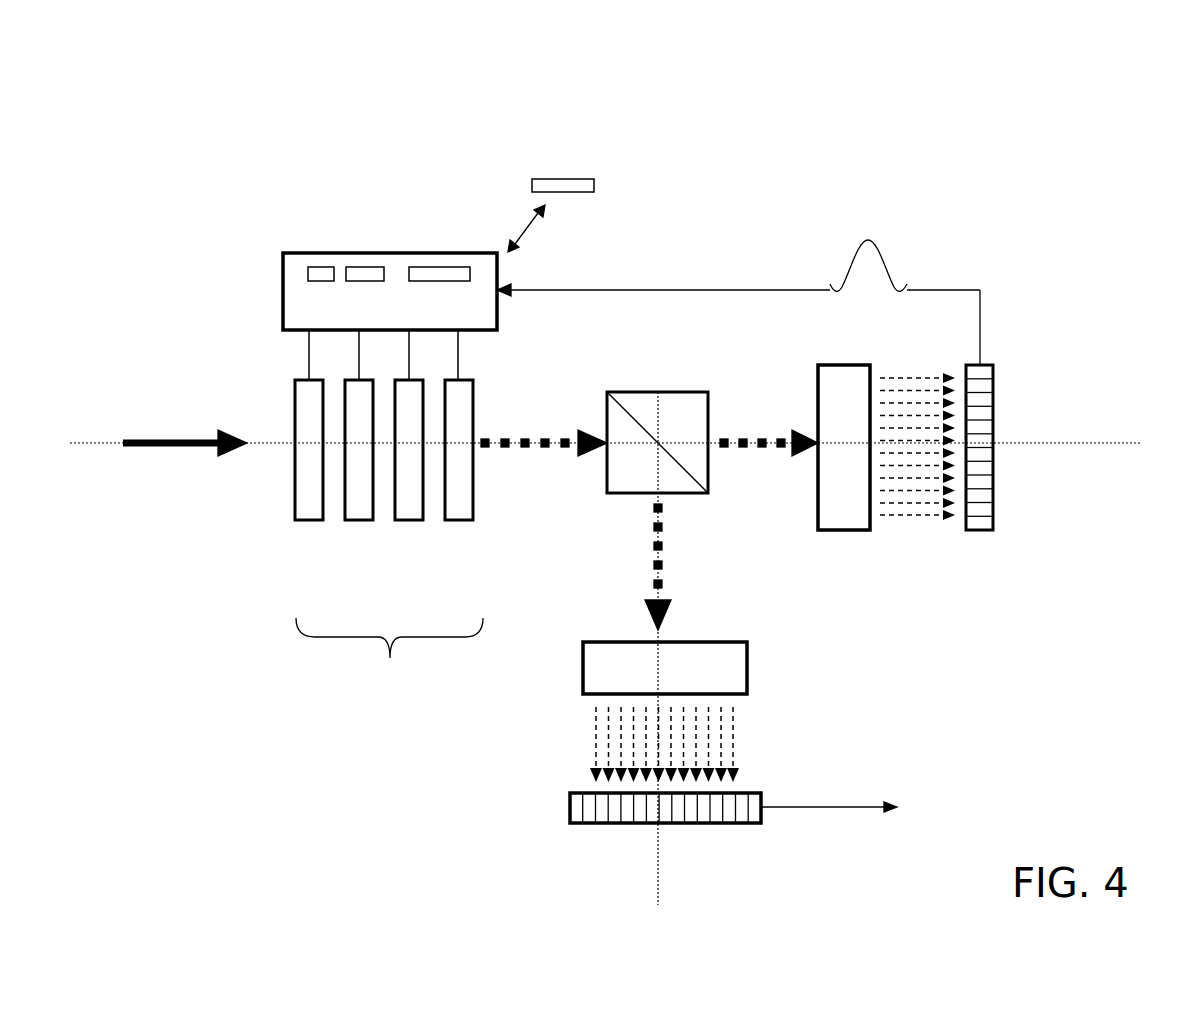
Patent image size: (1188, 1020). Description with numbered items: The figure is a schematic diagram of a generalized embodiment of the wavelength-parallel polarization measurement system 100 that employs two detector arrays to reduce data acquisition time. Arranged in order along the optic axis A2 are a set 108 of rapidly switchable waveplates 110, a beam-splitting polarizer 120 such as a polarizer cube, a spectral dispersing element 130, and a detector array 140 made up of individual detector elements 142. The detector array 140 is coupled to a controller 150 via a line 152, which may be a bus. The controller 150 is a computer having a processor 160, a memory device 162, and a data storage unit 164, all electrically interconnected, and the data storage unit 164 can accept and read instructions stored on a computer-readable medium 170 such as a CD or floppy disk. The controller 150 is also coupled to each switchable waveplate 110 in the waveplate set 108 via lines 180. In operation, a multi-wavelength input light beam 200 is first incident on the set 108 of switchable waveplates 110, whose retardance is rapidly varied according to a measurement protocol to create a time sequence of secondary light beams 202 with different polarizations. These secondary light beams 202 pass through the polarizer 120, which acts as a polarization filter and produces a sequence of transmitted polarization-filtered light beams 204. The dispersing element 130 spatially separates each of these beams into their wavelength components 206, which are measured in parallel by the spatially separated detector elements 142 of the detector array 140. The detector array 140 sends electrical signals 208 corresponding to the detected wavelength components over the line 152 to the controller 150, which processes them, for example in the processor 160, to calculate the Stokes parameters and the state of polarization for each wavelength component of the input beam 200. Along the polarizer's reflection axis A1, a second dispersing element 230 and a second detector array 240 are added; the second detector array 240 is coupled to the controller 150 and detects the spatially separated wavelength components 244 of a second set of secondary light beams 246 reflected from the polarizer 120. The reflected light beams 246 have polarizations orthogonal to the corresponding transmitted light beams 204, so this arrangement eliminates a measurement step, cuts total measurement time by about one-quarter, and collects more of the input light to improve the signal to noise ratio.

The wavelength-parallel polarization measurement system 100 is at (336, 94).
The set of switchable waveplates 108 is at (389, 668).
The switchable waveplate 110 is at (408, 521).
The polarizer 120 is at (700, 494).
The spectral dispersing element 130 is at (845, 531).
The detector array 140 is at (970, 555).
The detector element 142 is at (993, 506).
The controller 150 is at (283, 300).
The line 152 is at (780, 290).
The processor 160 is at (320, 267).
The memory device 162 is at (370, 267).
The data storage unit 164 is at (445, 267).
The computer-readable medium 170 is at (572, 179).
The lines 180 is at (309, 357).
The multi-wavelength input light beam 200 is at (185, 452).
The secondary light beams 202 is at (523, 440).
The polarization-filtered light beams 204 is at (755, 440).
The wavelength components 206 is at (935, 555).
The electrical signals 208 is at (888, 262).
The second dispersing element 230 is at (610, 642).
The second detector array 240 is at (700, 857).
The spatially separated wavelength components 244 is at (565, 763).
The second set of secondary light beams 246 is at (662, 565).
The axis A1 is at (658, 860).
The optic axis A2 is at (1065, 444).